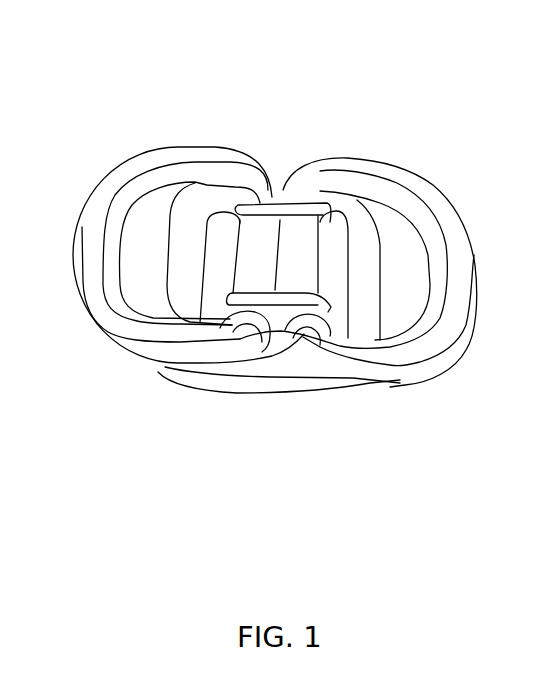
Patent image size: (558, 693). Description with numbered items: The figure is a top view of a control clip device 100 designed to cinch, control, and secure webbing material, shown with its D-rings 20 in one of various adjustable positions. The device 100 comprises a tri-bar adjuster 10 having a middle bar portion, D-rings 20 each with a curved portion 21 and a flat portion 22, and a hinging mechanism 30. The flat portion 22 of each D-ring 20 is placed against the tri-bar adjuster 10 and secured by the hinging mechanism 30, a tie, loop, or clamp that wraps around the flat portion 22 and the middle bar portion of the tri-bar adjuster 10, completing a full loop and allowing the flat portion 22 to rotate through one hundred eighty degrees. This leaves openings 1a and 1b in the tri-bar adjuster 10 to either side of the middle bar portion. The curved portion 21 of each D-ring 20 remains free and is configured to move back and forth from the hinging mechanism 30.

The control clip device 100 is at (122, 165).
The tri-bar adjuster 10 is at (205, 185).
The D-rings 20 is at (388, 385).
The curved portion 21 is at (453, 272).
The flat portion 22 is at (308, 188).
The hinging mechanism 30 is at (307, 293).
The opening 1a is at (217, 278).
The opening 1b is at (330, 290).